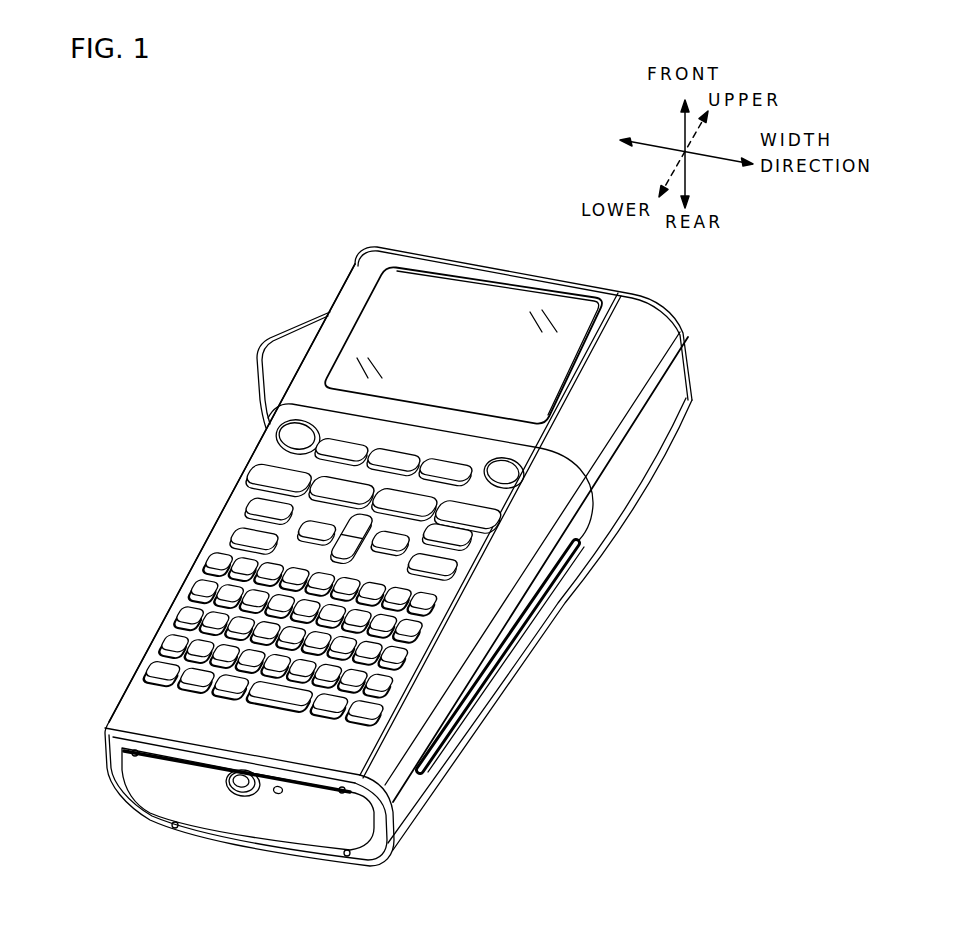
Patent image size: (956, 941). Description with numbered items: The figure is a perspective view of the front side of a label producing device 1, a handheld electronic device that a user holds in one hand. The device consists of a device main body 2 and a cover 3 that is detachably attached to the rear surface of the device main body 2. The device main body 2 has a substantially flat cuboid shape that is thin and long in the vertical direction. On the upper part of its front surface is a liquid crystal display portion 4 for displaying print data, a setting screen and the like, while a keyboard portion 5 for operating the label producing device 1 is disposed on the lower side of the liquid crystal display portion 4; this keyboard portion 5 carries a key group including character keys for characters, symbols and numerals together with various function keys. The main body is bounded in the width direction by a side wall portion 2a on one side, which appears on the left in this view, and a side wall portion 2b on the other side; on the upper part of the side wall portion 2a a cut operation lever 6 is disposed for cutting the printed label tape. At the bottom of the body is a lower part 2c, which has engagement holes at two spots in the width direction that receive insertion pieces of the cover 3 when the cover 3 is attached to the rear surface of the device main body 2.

The label producing device 1 is at (168, 238).
The device main body 2 is at (487, 278).
The side wall portion 2a is at (117, 712).
The side wall portion 2b is at (470, 680).
The lower part 2c is at (171, 796).
The cover 3 is at (668, 387).
The liquid crystal display portion 4 is at (392, 316).
The keyboard portion 5 is at (238, 430).
The cut operation lever 6 is at (280, 345).